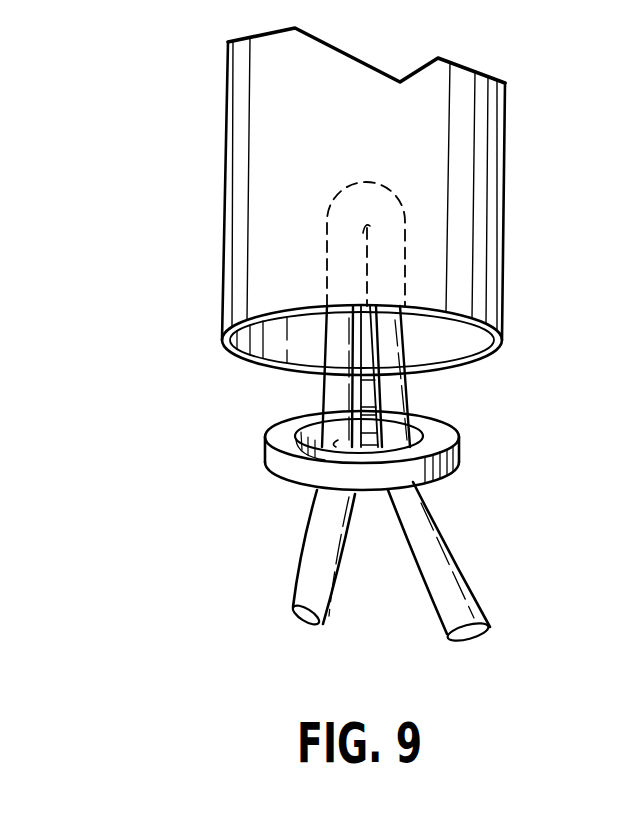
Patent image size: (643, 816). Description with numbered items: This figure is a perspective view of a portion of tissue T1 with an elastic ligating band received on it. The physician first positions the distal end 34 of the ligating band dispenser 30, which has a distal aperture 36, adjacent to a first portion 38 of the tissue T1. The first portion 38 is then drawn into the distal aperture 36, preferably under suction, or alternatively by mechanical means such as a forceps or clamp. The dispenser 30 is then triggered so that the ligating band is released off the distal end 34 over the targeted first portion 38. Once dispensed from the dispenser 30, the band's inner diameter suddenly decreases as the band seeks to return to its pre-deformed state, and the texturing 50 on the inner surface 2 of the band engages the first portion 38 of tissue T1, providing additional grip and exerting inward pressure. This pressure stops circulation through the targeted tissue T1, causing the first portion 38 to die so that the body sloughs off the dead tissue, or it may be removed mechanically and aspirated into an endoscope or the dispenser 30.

The ligating band dispenser 30 is at (482, 172).
The distal end 34 is at (490, 343).
The distal aperture 36 is at (458, 357).
The texturing 50 is at (455, 457).
The inner surface 2 is at (303, 422).
The first portion 38 is at (307, 442).
The tissue T1 is at (440, 568).